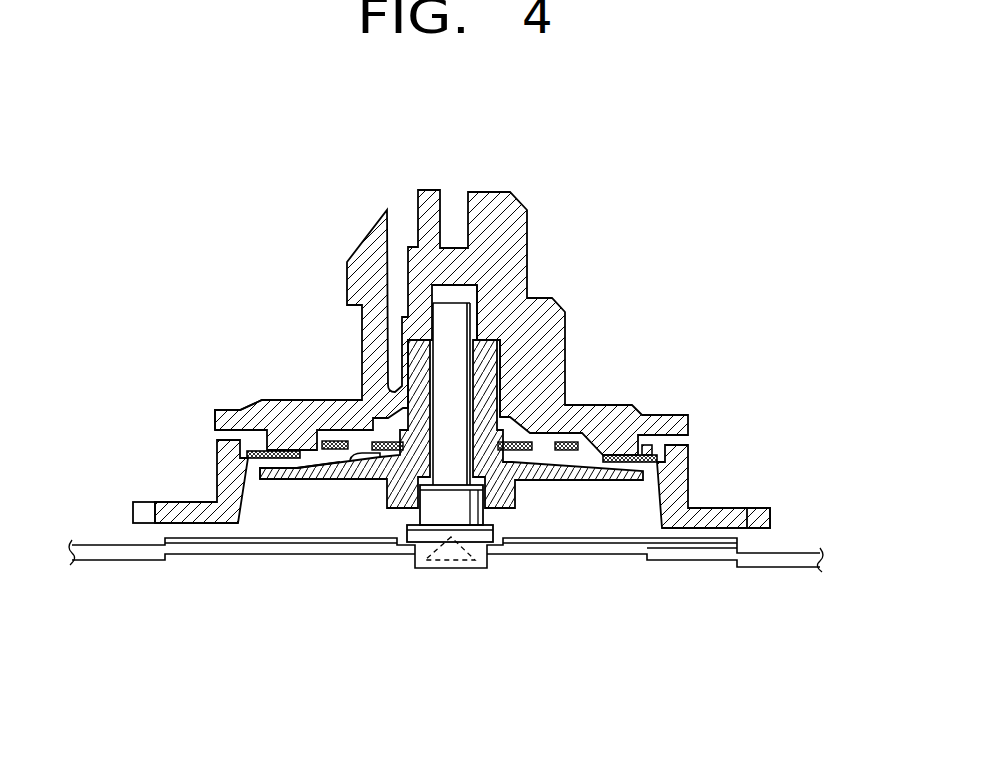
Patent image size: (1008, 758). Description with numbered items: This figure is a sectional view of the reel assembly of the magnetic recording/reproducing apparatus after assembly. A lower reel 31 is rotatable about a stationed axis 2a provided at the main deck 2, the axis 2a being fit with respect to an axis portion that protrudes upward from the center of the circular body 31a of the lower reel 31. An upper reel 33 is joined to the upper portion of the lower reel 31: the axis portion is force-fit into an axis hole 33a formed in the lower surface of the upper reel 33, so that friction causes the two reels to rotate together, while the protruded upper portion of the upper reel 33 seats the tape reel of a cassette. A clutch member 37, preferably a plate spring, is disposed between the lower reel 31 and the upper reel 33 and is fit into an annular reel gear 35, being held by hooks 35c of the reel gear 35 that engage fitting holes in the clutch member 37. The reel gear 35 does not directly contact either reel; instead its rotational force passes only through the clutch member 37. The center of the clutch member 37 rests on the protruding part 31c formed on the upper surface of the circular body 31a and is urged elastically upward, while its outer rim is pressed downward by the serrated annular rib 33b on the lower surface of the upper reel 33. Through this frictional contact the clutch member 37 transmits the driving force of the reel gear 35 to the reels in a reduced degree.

The main deck 2 is at (768, 560).
The stationed axis 2a is at (445, 320).
The lower reel 31 is at (567, 485).
The circular body 31a is at (285, 473).
The protruding part 31c is at (349, 462).
The upper reel 33 is at (571, 293).
The axis hole 33a is at (487, 347).
The annular rib 33b is at (278, 420).
The reel gear 35 is at (697, 468).
The hooks 35c is at (648, 455).
The clutch member 37 is at (572, 443).